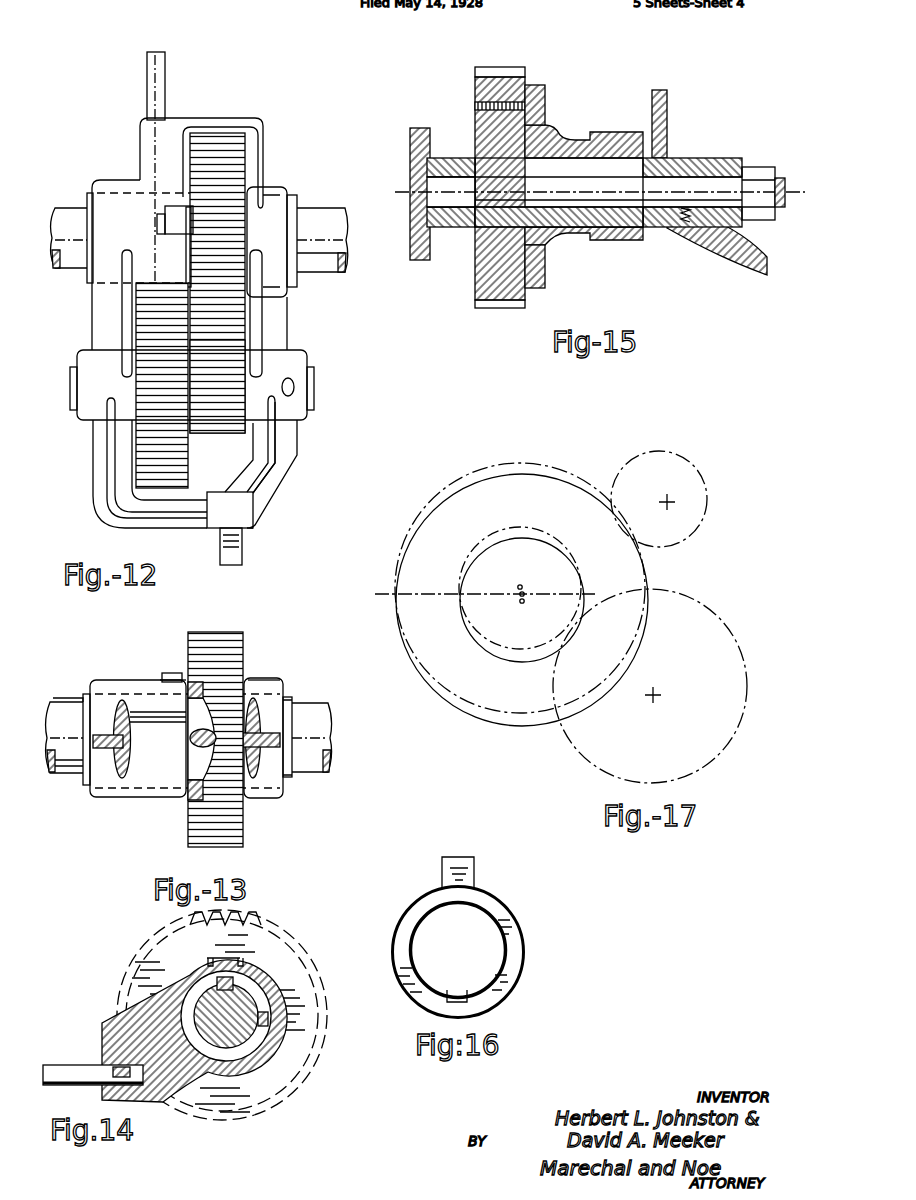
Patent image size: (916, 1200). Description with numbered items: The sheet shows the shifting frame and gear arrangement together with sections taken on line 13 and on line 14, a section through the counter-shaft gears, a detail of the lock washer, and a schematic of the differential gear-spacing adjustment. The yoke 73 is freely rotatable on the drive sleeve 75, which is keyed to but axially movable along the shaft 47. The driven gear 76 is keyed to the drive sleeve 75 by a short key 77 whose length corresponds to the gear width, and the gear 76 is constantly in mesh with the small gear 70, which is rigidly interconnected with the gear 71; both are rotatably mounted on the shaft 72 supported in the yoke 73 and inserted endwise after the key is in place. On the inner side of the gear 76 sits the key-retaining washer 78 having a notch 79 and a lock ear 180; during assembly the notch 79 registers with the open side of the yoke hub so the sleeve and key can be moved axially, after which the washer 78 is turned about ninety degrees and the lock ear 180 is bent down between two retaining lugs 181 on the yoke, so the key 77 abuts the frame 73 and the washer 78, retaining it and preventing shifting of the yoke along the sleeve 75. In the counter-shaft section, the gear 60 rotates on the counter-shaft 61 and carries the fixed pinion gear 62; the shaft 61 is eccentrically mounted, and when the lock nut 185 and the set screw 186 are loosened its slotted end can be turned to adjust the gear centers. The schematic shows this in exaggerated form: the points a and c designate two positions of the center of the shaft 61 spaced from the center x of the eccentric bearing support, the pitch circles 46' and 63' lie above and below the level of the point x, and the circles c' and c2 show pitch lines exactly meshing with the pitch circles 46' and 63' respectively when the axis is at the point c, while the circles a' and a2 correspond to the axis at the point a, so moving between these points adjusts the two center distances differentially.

In FIG. 12, the section line 13— 13 is at (60, 310).
In FIG. 15, the section line 13— 13 is at (666, 103).
In FIG. 12, the section line 14— 14 is at (155, 52).
In FIG. 17, the pitch circle of motor pinion 46' is at (667, 489).
In FIG. 12, the shaft 47 is at (332, 213).
In FIG. 13, the shaft 47 is at (318, 715).
In FIG. 14, the shaft 47 is at (267, 1040).
In FIG. 15, the gear 60 is at (475, 283).
In FIG. 17, the gear 60 is at (521, 584).
In FIG. 15, the counter-shaft 61 is at (637, 172).
In FIG. 15, the pinion gear 62 is at (623, 234).
In FIG. 17, the pinion gear 62 is at (513, 600).
In FIG. 17, the pitch circle of speed-reducing gear 63' is at (664, 686).
In FIG. 12, the small gear 70 is at (212, 433).
In FIG. 12, the gear 71 is at (140, 465).
In FIG. 12, the shaft 72 is at (310, 388).
In FIG. 12, the yoke 73 is at (283, 450).
In FIG. 13, the yoke 73 is at (257, 682).
In FIG. 14, the yoke 73 is at (180, 1093).
In FIG. 12, the drive sleeve 75 is at (290, 203).
In FIG. 13, the drive sleeve 75 is at (292, 697).
In FIG. 14, the drive sleeve 75 is at (263, 1003).
In FIG. 12, the driven gear 76 is at (244, 143).
In FIG. 13, the driven gear 76 is at (228, 633).
In FIG. 14, the driven gear 76 is at (162, 953).
In FIG. 13, the key 77 is at (215, 743).
In FIG. 14, the key 77 is at (260, 1027).
In FIG. 16, the key-retaining washer 78 is at (517, 952).
In FIG. 16, the notch 79 is at (468, 995).
In FIG. 13, the lock ear 180 is at (163, 680).
In FIG. 14, the lock ear 180 is at (230, 953).
In FIG. 12, the retaining lugs 181 is at (167, 227).
In FIG. 13, the retaining lugs 181 is at (178, 673).
In FIG. 14, the retaining lugs 181 is at (235, 960).
In FIG. 16, the retaining lugs 181 is at (465, 866).
In FIG. 15, the lock nut 185 is at (763, 217).
In FIG. 15, the set screw 186 is at (685, 225).
In FIG. 17, the center of eccentric bearing support x is at (513, 597).
In FIG. 17, the point a is at (547, 577).
In FIG. 17, the point c is at (531, 614).
In FIG. 17, the circle a' is at (558, 459).
In FIG. 17, the circle c1 c' is at (536, 472).
In FIG. 17, the circle a2 is at (497, 648).
In FIG. 17, the circle c2 is at (512, 660).